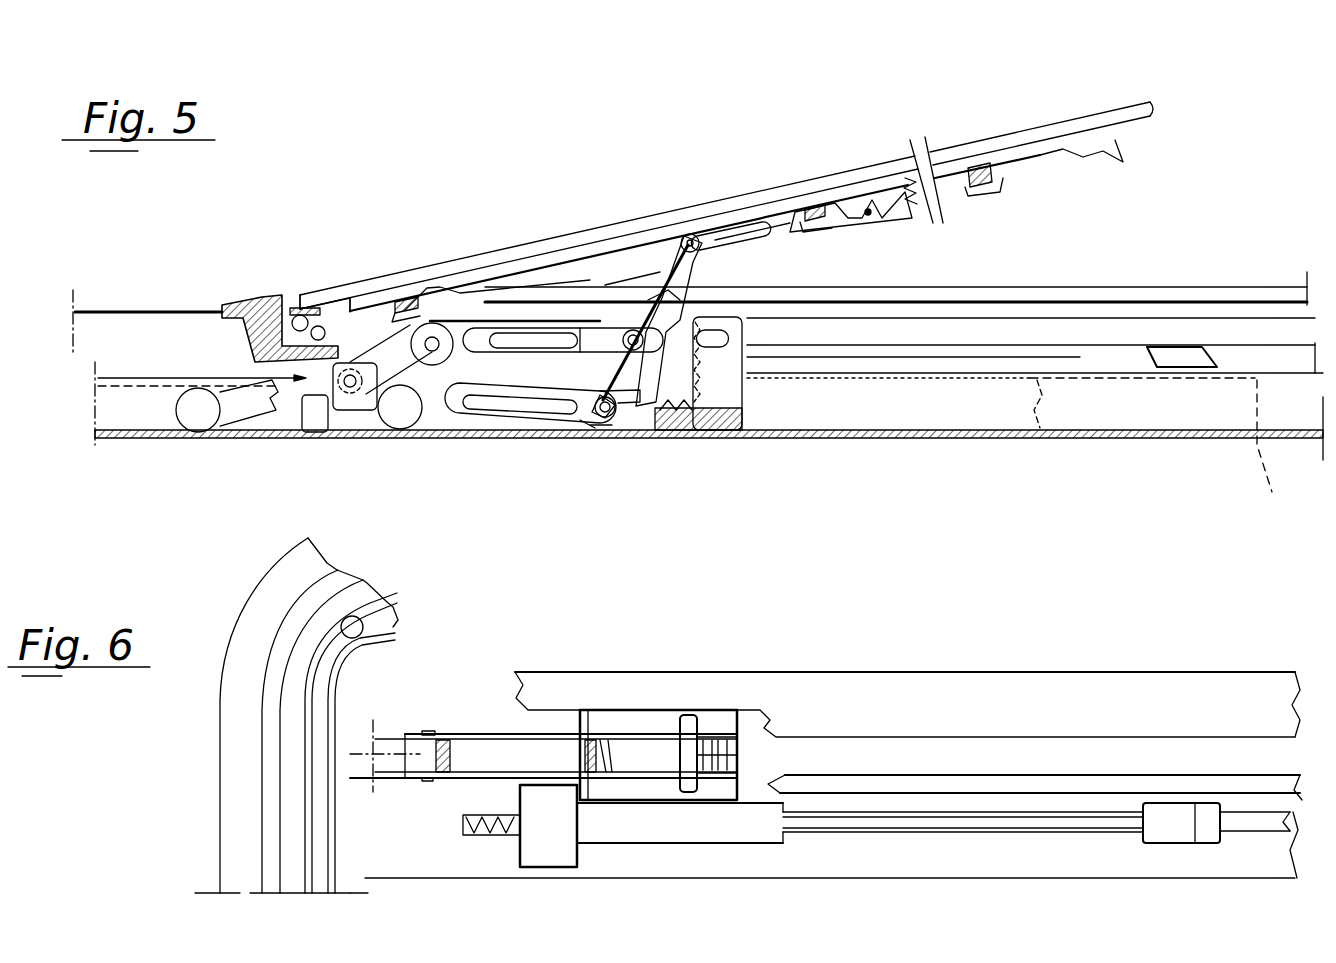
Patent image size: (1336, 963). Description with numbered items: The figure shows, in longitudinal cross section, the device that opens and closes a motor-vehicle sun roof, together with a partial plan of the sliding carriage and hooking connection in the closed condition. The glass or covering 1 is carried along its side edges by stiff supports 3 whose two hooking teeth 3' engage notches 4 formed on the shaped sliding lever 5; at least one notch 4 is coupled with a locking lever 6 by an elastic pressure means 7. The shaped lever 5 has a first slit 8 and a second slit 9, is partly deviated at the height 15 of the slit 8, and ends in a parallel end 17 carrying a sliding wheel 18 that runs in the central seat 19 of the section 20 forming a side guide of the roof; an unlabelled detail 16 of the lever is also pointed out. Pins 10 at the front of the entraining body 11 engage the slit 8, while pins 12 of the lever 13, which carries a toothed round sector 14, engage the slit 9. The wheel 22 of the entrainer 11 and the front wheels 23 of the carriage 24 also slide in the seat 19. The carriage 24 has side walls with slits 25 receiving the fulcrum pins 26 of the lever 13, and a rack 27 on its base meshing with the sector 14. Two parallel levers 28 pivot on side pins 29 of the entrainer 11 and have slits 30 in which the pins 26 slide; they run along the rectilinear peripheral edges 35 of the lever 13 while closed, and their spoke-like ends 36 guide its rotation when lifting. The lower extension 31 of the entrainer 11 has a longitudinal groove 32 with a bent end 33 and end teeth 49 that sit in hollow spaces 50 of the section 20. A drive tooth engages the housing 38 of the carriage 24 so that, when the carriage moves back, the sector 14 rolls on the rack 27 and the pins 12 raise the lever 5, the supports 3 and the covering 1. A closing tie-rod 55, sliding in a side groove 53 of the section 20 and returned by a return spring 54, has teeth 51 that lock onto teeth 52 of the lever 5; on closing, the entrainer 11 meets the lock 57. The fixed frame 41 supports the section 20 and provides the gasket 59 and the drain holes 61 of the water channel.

In FIG. 5, the covering 1 is at (832, 178).
In FIG. 5, the stiff supports 3 is at (695, 233).
In FIG. 5, the hooking teeth 3' is at (705, 250).
In FIG. 5, the notches 4 is at (398, 310).
In FIG. 5, the shaped sliding levers 5 is at (615, 268).
In FIG. 5, the locking lever 6 is at (892, 224).
In FIG. 5, the elastic pressure means 7 is at (907, 197).
In FIG. 5, the slit 8 is at (345, 328).
In FIG. 5, the slit 9 is at (740, 232).
In FIG. 5, the pins 10 is at (353, 388).
In FIG. 5, the entraining bodies 11 is at (412, 326).
In FIG. 6, the entraining bodies 11 is at (393, 747).
In FIG. 5, the pins 12 is at (686, 236).
In FIG. 6, the pins 12 is at (690, 727).
In FIG. 5, the levers 13 is at (695, 262).
In FIG. 6, the levers 13 is at (597, 757).
In FIG. 5, the toothed round sector 14 is at (745, 340).
In FIG. 5, the height 15 is at (303, 293).
In FIG. 5, the rail underside 16 is at (735, 232).
In FIG. 5, the ends 17 is at (250, 432).
In FIG. 5, the sliding wheel 18 is at (195, 425).
In FIG. 5, the central seat 19 is at (890, 400).
In FIG. 6, the central seat 19 is at (1035, 757).
In FIG. 5, the section 20 is at (1053, 432).
In FIG. 6, the section 20 is at (1122, 700).
In FIG. 5, the wheel 22 is at (402, 430).
In FIG. 5, the wheels 23 is at (715, 385).
In FIG. 5, the carriages 24 is at (707, 430).
In FIG. 6, the carriages 24 is at (637, 720).
In FIG. 5, the slits 25 is at (655, 300).
In FIG. 5, the pins 26 is at (630, 330).
In FIG. 5, the racks 27 is at (663, 425).
In FIG. 6, the racks 27 is at (740, 748).
In FIG. 5, the parallel levers 28 is at (446, 323).
In FIG. 6, the parallel levers 28 is at (492, 747).
In FIG. 5, the side pins 29 is at (434, 352).
In FIG. 6, the side pins 29 is at (432, 781).
In FIG. 5, the slits 30 is at (500, 320).
In FIG. 5, the lower extensions 31 is at (490, 404).
In FIG. 5, the longitudinal grooves 32 is at (530, 424).
In FIG. 5, the bent ends 33 is at (596, 414).
In FIG. 5, the peripheral edges 35 is at (637, 420).
In FIG. 5, the spoke-like ends 36 is at (640, 405).
In FIG. 5, the housing 38 is at (700, 350).
In FIG. 5, the fixed frame 41 is at (258, 300).
In FIG. 6, the fixed frame 41 is at (238, 818).
In FIG. 5, the end teeth 49 is at (593, 420).
In FIG. 5, the hollow spaces 50 is at (603, 440).
In FIG. 5, the teeth 51 is at (1180, 350).
In FIG. 6, the teeth 51 is at (1170, 820).
In FIG. 5, the teeth 52 is at (1093, 158).
In FIG. 6, the side grooves 53 is at (847, 830).
In FIG. 6, the return springs 54 is at (485, 835).
In FIG. 5, the closing tie-rods 55 is at (1276, 450).
In FIG. 6, the closing tie-rods 55 is at (1018, 822).
In FIG. 5, the locks 57 is at (303, 428).
In FIG. 6, the gasket 59 is at (290, 735).
In FIG. 6, the drain holes 61 is at (342, 626).